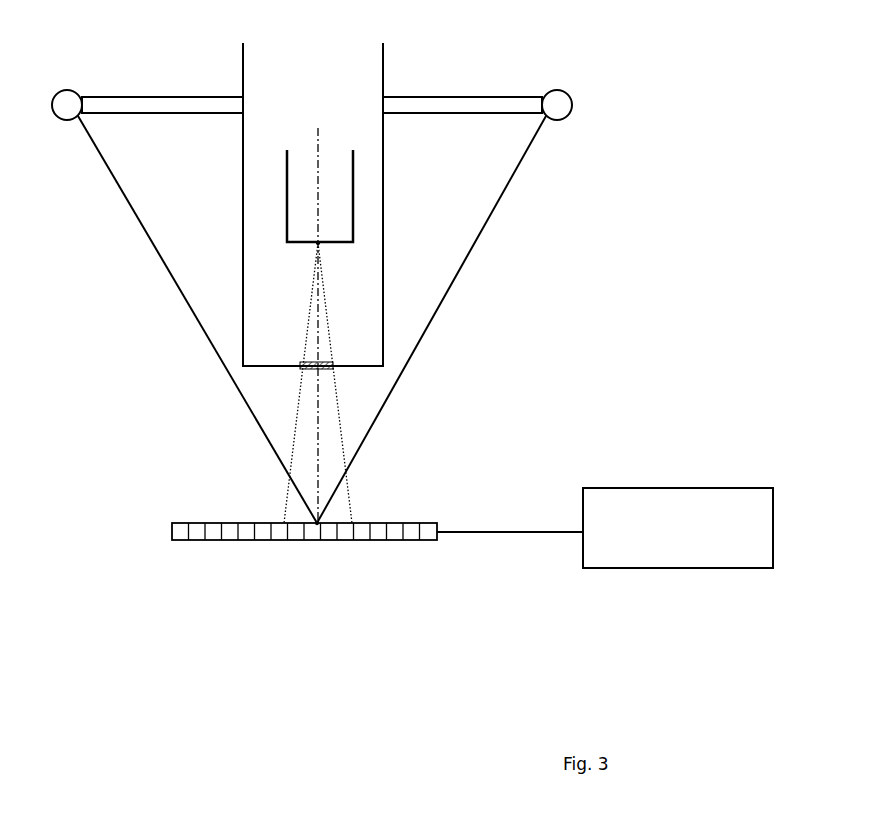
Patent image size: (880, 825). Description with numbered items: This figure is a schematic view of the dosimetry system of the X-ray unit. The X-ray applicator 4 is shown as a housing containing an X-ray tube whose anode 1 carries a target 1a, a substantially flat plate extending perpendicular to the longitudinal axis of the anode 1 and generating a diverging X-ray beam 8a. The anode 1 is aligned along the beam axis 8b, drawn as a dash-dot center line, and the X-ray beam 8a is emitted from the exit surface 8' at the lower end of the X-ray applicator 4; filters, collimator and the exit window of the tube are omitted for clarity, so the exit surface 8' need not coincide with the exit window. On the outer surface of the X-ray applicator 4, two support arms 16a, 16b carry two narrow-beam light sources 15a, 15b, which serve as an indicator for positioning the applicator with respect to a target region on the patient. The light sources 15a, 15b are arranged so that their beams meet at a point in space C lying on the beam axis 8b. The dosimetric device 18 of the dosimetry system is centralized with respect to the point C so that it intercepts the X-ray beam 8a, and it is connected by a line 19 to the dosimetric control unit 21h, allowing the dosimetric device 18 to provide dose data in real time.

The anode 1 is at (287, 170).
The target 1a is at (316, 247).
The X-ray applicator 4 is at (243, 46).
The exit surface 8' is at (259, 408).
The X-ray beam 8a is at (325, 330).
The beam axis 8b is at (318, 410).
The light source 15a is at (67, 90).
The light source 15b is at (557, 90).
The support arm 16a is at (143, 97).
The support arm 16b is at (463, 97).
The dosimetric device 18 is at (178, 540).
The signal line 19 is at (503, 532).
The dosimetric control unit 21h is at (673, 488).
The point in space C is at (317, 523).